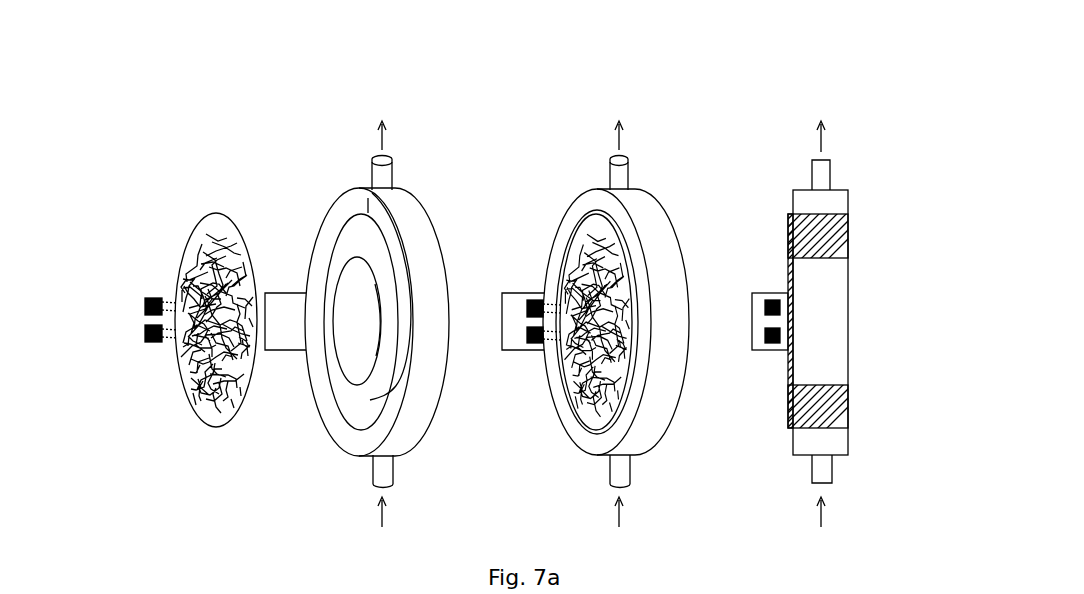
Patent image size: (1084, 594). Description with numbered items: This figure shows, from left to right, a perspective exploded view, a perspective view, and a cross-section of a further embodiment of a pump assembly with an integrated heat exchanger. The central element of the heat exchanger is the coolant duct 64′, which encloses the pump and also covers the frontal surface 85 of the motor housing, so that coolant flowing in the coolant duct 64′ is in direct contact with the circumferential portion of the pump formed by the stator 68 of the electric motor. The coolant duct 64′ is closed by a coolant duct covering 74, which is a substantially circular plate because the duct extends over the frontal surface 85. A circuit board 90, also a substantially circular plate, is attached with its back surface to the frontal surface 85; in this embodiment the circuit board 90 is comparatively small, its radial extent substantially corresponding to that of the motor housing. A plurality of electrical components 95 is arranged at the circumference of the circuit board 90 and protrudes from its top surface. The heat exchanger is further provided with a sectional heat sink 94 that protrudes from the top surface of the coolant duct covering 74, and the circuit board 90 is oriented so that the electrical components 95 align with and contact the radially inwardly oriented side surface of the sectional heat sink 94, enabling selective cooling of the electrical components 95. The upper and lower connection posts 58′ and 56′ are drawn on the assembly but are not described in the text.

The upper connector post 58′ is at (373, 158).
The lower connector post 56′ is at (378, 473).
The coolant duct covering 74 is at (403, 188).
The frontal surface 85 is at (372, 398).
The circuit board 90 is at (216, 427).
The sectional heat sink 94 is at (292, 293).
The electrical components 95 is at (140, 300).
The coolant duct 64′ is at (827, 200).
The stator 68 is at (843, 397).